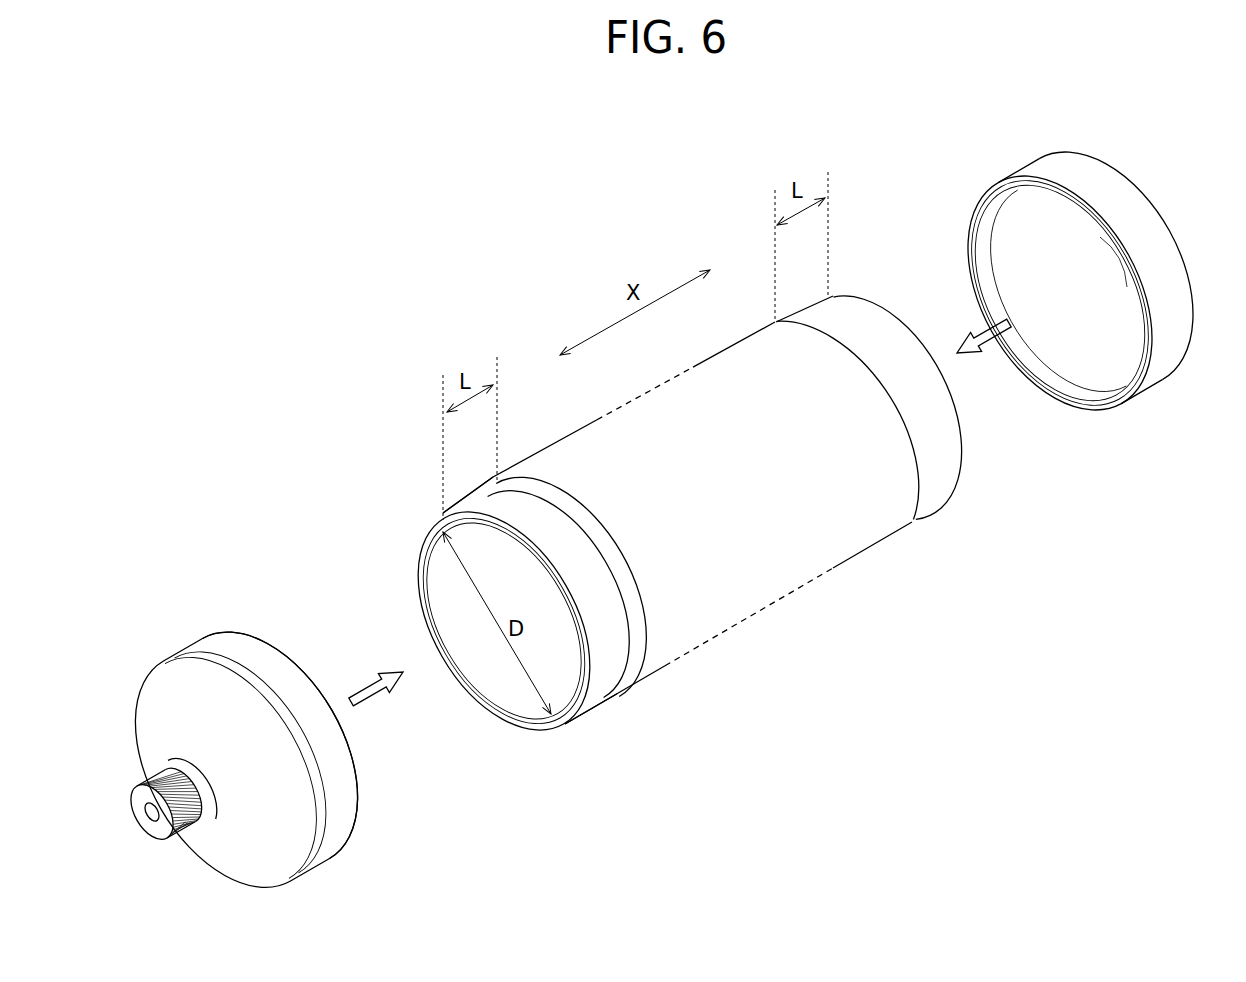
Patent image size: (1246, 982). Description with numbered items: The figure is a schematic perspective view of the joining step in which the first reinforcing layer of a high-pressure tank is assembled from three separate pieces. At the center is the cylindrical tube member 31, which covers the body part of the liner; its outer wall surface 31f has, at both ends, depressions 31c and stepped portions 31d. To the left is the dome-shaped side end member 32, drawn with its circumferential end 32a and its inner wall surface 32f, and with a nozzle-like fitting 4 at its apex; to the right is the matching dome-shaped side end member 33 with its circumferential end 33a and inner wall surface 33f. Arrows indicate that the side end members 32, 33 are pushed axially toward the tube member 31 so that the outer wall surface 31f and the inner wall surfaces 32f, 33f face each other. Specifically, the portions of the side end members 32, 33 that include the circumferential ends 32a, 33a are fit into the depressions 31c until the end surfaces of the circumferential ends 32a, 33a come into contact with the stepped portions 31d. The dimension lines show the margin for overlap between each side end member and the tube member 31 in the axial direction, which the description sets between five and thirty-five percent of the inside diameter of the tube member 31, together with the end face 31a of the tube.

The nozzle 4 is at (172, 838).
The tube member 31 is at (758, 572).
The end face of body 31a is at (575, 710).
The depressions 31c is at (600, 693).
The stepped portions 31d is at (638, 680).
The outer wall surface 31f is at (828, 318).
The side end member 32 is at (330, 842).
The circumferential end 32a is at (215, 633).
The inner wall surface 32f is at (356, 797).
The side end member 33 is at (1168, 372).
The circumferential end 33a is at (1016, 182).
The inner wall surface 33f is at (1074, 392).